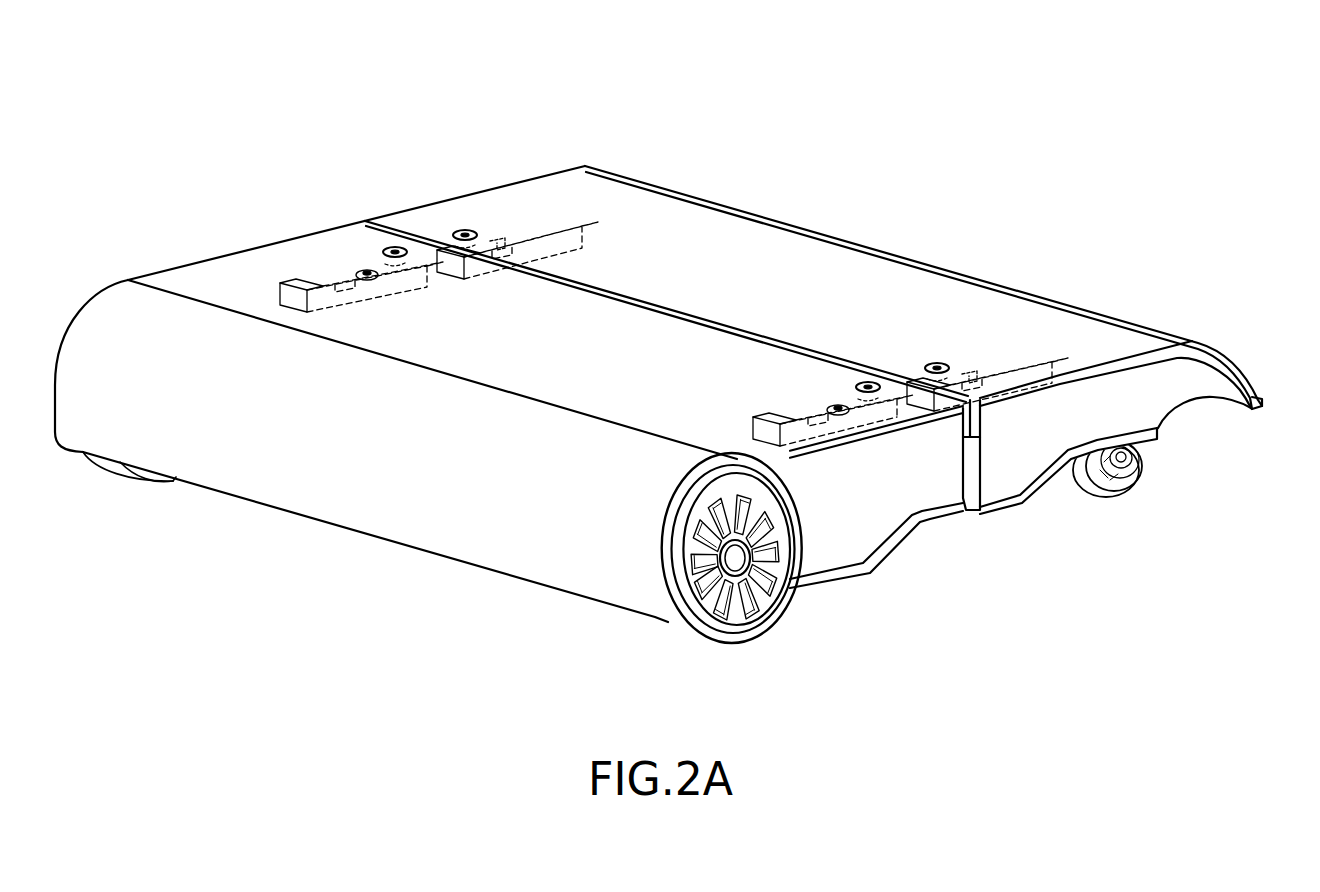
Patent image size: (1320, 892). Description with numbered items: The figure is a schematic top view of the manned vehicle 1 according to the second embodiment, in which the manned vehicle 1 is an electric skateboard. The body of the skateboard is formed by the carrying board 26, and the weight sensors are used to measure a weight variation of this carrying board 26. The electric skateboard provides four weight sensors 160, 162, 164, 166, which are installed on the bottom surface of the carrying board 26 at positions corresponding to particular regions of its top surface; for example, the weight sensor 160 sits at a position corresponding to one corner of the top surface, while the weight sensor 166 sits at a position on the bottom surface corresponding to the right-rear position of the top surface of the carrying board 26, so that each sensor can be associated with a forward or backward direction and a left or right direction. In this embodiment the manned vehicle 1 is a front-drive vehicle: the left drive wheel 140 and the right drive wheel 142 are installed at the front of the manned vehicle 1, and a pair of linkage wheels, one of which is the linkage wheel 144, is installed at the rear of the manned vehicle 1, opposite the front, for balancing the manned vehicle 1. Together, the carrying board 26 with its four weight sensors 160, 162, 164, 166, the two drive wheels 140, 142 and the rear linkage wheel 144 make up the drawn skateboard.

The manned vehicle 1 is at (664, 87).
The carrying board 26 is at (752, 204).
The left drive wheel 140 is at (768, 617).
The right drive wheel 142 is at (122, 467).
The linkage wheel 144 is at (1135, 470).
The weight sensor 160 is at (812, 417).
The weight sensor 162 is at (345, 277).
The weight sensor 164 is at (1017, 347).
The weight sensor 166 is at (511, 236).